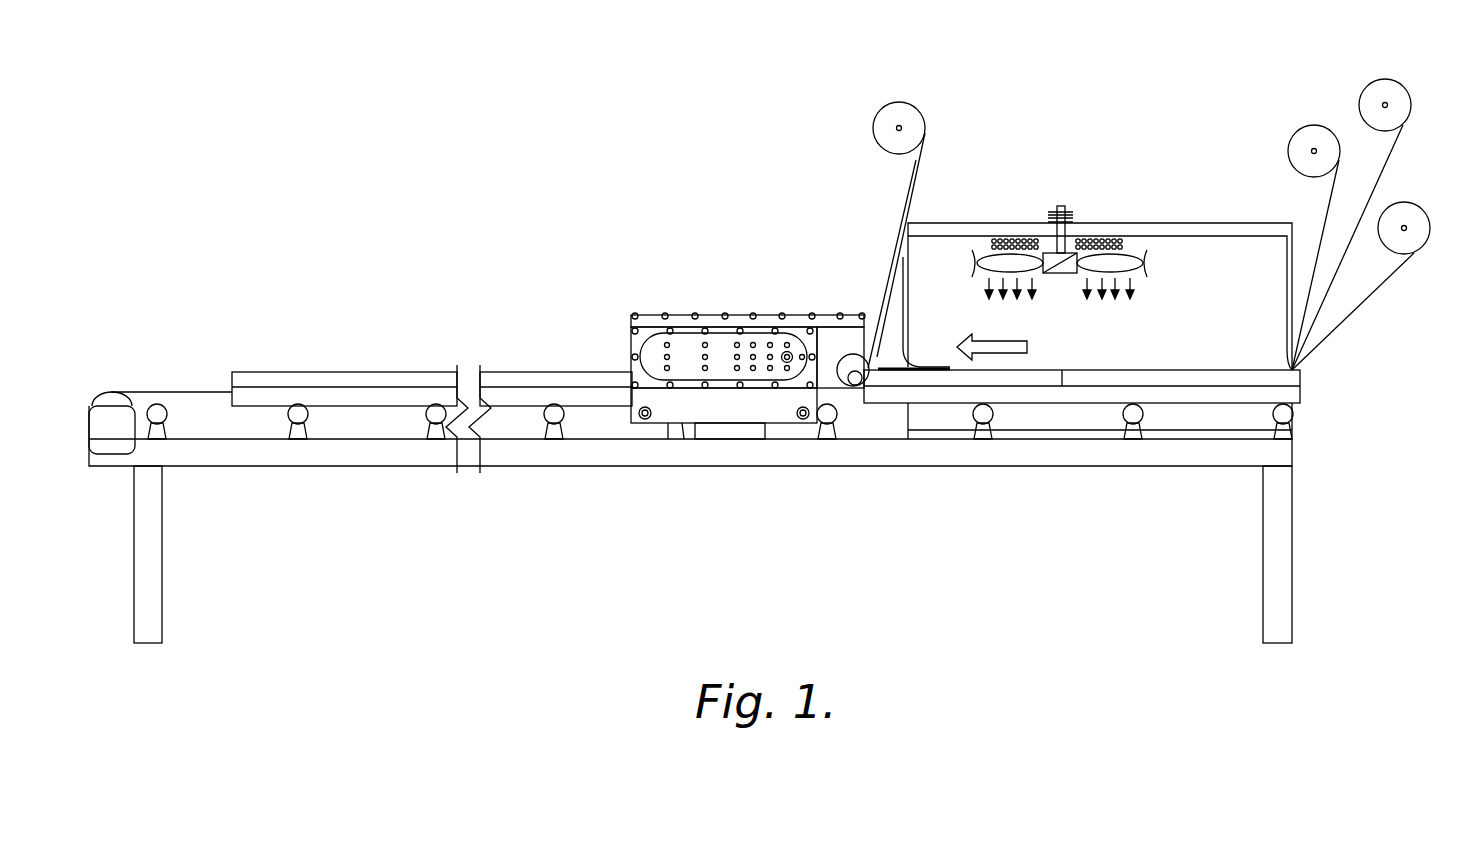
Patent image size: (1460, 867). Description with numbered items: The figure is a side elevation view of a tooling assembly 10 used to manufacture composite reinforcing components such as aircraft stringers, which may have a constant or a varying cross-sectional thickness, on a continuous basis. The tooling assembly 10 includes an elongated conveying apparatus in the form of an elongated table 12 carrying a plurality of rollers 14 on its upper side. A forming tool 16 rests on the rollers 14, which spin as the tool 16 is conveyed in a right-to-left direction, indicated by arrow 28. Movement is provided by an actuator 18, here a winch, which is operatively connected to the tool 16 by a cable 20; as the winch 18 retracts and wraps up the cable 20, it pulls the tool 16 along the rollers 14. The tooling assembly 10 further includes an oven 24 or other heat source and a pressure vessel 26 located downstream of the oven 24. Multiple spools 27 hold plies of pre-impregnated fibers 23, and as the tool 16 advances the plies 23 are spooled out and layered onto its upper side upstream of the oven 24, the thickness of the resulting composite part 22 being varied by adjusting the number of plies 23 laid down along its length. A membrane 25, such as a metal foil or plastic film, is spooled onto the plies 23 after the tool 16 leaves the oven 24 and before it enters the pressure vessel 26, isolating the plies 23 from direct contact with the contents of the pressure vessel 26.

The tooling assembly 10 is at (335, 150).
The elongated table 12 is at (265, 455).
The rollers 14 is at (157, 414).
The forming tool 16 is at (332, 395).
The actuator 18 is at (93, 423).
The cable 20 is at (183, 392).
The composite part 22 is at (512, 378).
The plies of pre-impregnated fibers 23 is at (1328, 212).
The oven 24 is at (1118, 230).
The membrane 25 is at (910, 200).
The pressure vessel 26 is at (713, 327).
The spools 27 is at (1368, 98).
The arrow 28 is at (1014, 347).